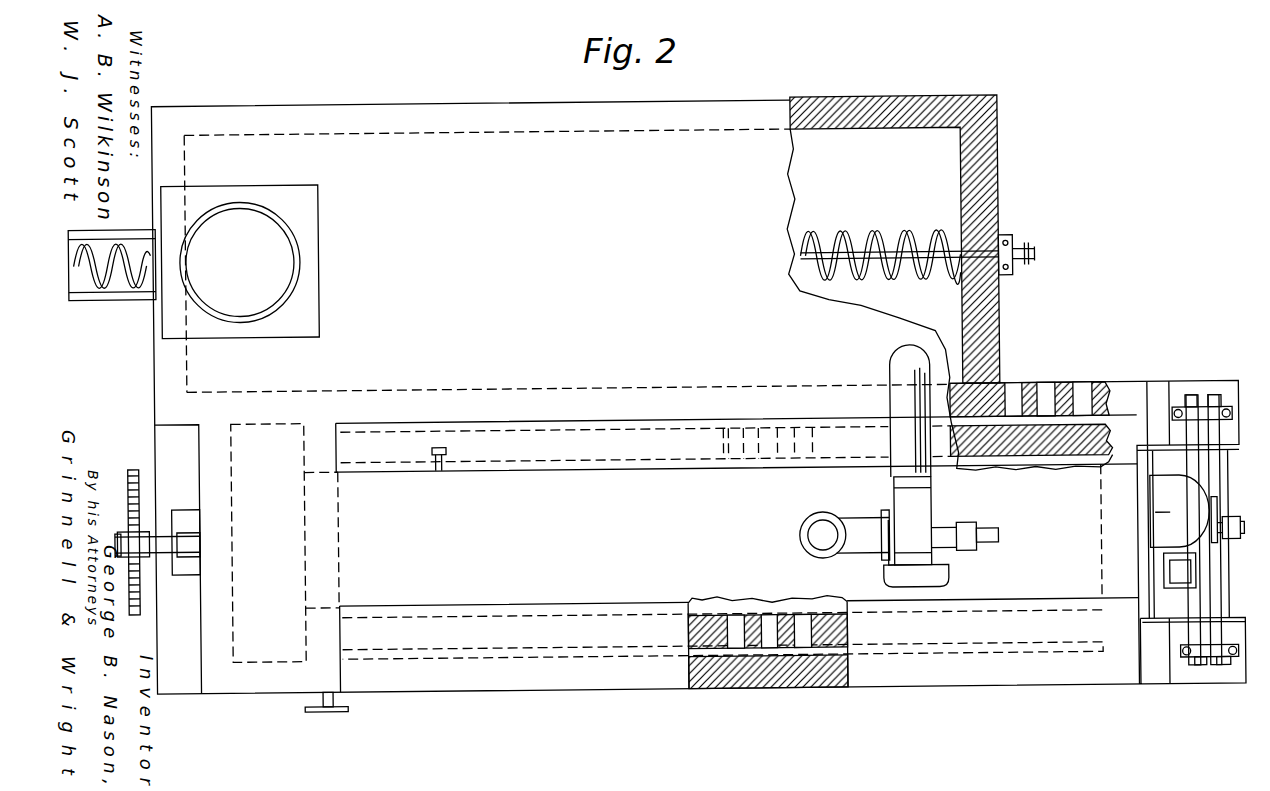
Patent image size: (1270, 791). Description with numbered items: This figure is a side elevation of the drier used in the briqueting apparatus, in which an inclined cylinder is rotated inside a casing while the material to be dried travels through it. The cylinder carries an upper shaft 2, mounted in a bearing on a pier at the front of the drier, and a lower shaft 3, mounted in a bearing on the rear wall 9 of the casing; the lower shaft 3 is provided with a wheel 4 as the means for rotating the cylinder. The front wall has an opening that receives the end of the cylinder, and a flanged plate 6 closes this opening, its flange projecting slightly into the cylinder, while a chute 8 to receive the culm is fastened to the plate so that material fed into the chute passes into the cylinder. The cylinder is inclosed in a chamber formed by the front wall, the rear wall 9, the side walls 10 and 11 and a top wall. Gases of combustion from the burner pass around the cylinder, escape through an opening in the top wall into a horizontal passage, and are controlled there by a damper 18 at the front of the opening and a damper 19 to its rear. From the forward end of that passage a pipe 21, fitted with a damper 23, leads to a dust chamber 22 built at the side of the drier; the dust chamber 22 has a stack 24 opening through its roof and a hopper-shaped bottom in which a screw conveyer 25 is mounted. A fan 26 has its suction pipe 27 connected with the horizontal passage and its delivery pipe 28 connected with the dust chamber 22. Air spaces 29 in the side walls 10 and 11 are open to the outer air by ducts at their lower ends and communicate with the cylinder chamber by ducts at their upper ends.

The upper shaft 2 is at (1242, 538).
The lower shaft 3 is at (158, 540).
The wheel 4 is at (128, 470).
The flanged plate 6 is at (1143, 445).
The bearing plate 8 is at (1180, 572).
The rear wall 9 is at (160, 440).
The side wall 10 is at (1002, 686).
The side wall 11 is at (1065, 383).
The damper 18 is at (444, 470).
The damper 19 is at (322, 713).
The pipe 21 is at (1193, 495).
The dust chamber 22 is at (648, 286).
The damper 23 is at (1217, 515).
The stack 24 is at (297, 282).
The screw conveyer 25 is at (912, 232).
The fan 26 is at (917, 512).
The suction pipe 27 is at (797, 533).
The delivery pipe 28 is at (898, 382).
The air spaces 29 is at (1010, 413).